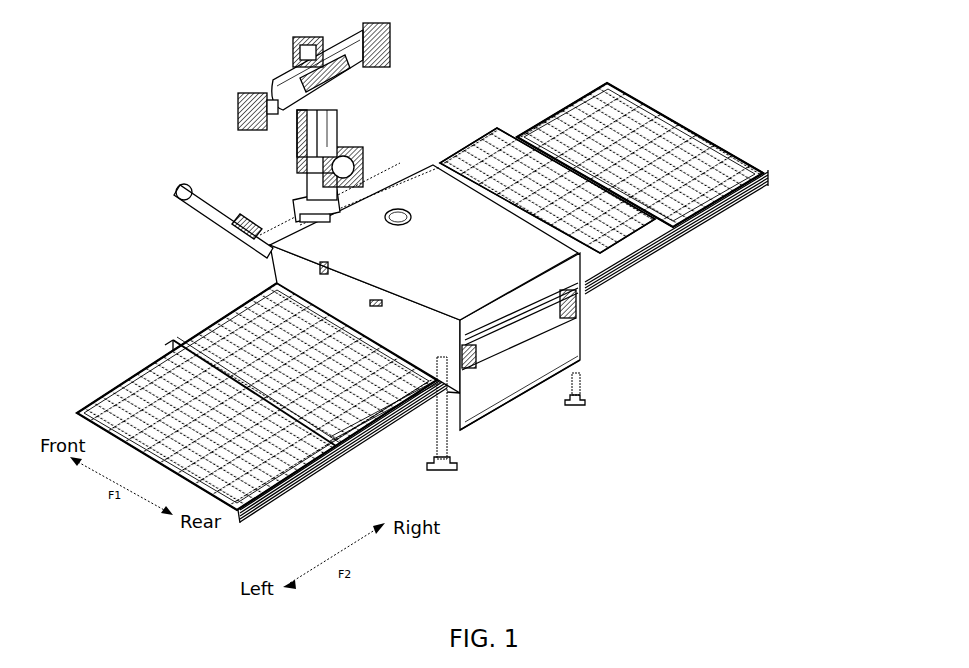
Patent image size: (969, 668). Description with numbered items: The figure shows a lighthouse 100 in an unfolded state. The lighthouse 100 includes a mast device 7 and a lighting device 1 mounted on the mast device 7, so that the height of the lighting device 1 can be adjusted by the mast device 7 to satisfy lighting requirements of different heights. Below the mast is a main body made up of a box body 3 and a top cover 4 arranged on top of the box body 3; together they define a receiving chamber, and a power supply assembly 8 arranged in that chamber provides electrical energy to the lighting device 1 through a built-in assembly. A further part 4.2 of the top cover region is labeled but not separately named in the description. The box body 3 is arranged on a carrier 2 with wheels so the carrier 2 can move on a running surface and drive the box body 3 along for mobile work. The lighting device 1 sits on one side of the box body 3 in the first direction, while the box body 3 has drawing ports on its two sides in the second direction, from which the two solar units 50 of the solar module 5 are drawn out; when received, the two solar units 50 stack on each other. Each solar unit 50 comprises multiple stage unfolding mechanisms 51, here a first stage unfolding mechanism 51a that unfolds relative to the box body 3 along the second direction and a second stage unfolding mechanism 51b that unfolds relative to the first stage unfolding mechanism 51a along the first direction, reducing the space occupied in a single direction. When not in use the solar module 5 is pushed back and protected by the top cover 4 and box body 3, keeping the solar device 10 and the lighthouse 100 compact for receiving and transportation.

The lighthouse 100 is at (466, 285).
The solar device 10 is at (140, 367).
The lighting device 1 is at (289, 119).
The mast device 7 is at (283, 62).
The carrier 2 is at (545, 405).
The box body 3 is at (520, 393).
The top cover 4 is at (548, 330).
The slider bracket 4.2 is at (520, 355).
The solar module 5 is at (478, 319).
The power supply assembly 8 is at (478, 319).
The solar unit 50 is at (521, 362).
The stage unfolding mechanism 51 is at (521, 362).
The first stage unfolding mechanism 51a is at (617, 280).
The second stage unfolding mechanism 51b is at (667, 237).